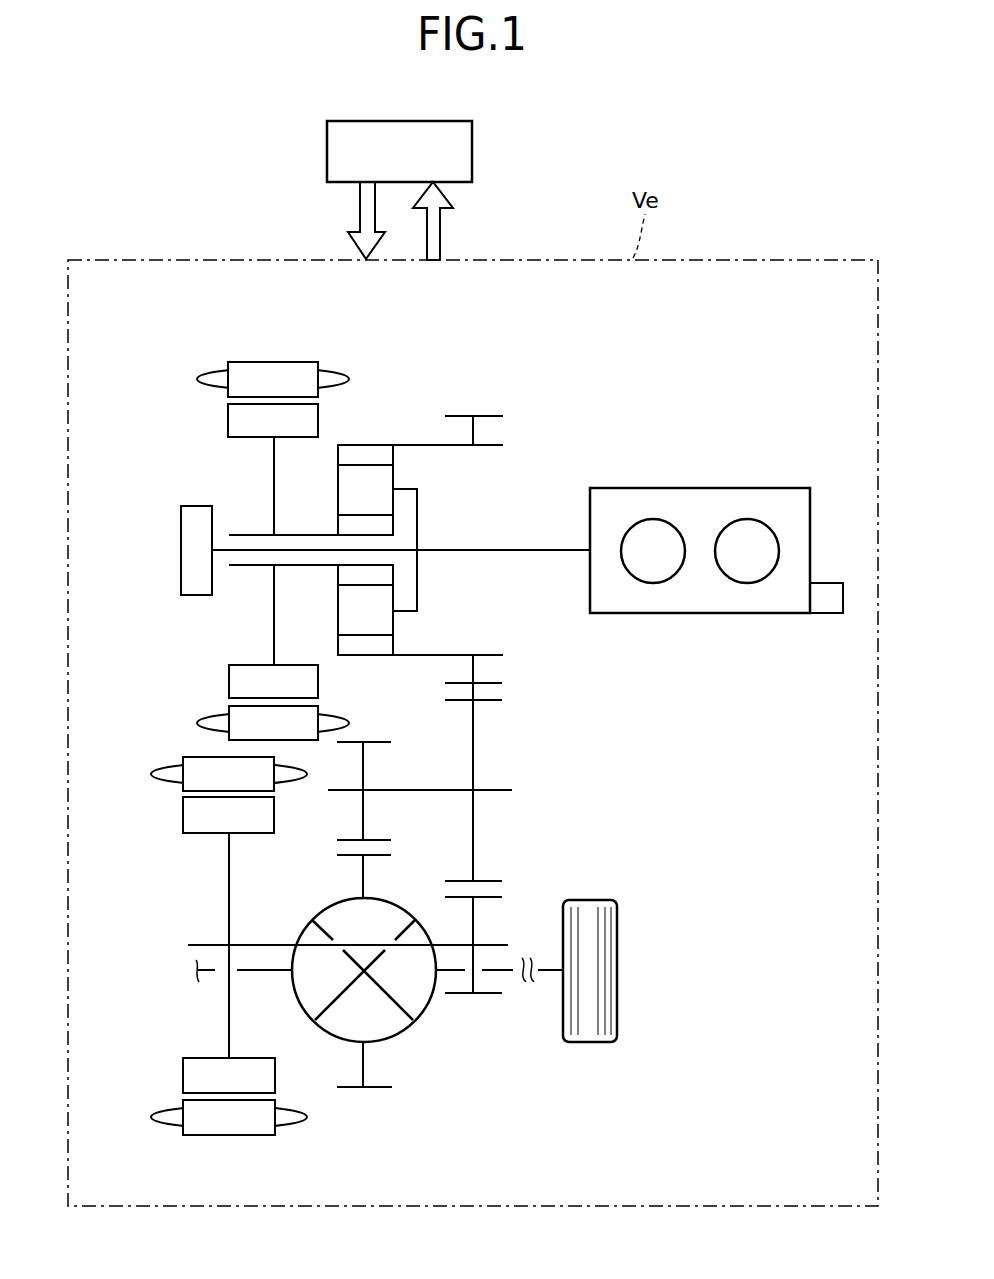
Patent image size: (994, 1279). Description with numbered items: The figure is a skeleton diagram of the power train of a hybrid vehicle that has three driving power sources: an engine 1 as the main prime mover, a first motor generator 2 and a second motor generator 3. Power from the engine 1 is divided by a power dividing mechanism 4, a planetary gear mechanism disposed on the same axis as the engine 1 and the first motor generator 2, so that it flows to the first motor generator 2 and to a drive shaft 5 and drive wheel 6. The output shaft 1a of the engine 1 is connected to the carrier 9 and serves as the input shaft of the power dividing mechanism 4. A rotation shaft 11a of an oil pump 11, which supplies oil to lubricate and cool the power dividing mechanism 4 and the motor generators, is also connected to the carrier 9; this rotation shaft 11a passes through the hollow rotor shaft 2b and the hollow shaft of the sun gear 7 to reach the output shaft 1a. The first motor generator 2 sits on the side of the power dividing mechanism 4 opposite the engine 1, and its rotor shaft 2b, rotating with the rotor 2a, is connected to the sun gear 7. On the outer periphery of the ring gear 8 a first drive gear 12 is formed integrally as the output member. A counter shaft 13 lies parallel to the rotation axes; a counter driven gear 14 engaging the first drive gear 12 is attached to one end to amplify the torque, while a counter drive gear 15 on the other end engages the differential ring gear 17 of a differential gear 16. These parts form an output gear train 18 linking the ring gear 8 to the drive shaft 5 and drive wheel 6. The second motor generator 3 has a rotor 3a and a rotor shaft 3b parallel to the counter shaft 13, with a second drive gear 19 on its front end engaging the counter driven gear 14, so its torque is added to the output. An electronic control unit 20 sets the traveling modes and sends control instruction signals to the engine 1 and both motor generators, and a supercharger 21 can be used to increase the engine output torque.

The engine 1 is at (708, 613).
The output shaft 1a is at (522, 550).
The first motor generator 2 is at (256, 535).
The rotor 2a is at (228, 420).
The rotor shaft 2b is at (237, 567).
The second motor generator 3 is at (299, 962).
The rotor 3a is at (183, 817).
The rotor shaft 3b is at (262, 945).
The power dividing mechanism 4 is at (337, 471).
The drive shaft 5 is at (518, 974).
The drive wheel 6 is at (588, 1042).
The sun gear 7 is at (335, 578).
The ring gear 8 is at (365, 445).
The carrier 9 is at (417, 515).
The oil pump 11 is at (197, 597).
The rotation shaft 11a is at (218, 535).
The first drive gear 12 is at (485, 416).
The counter shaft 13 is at (421, 790).
The counter driven gear 14 is at (502, 694).
The counter drive gear 15 is at (377, 742).
The differential gear 16 is at (404, 1035).
The differential ring gear 17 is at (374, 1087).
The output gear train 18 is at (444, 854).
The second drive gear 19 is at (485, 994).
The electronic control unit 20 is at (472, 150).
The supercharger 21 is at (830, 613).